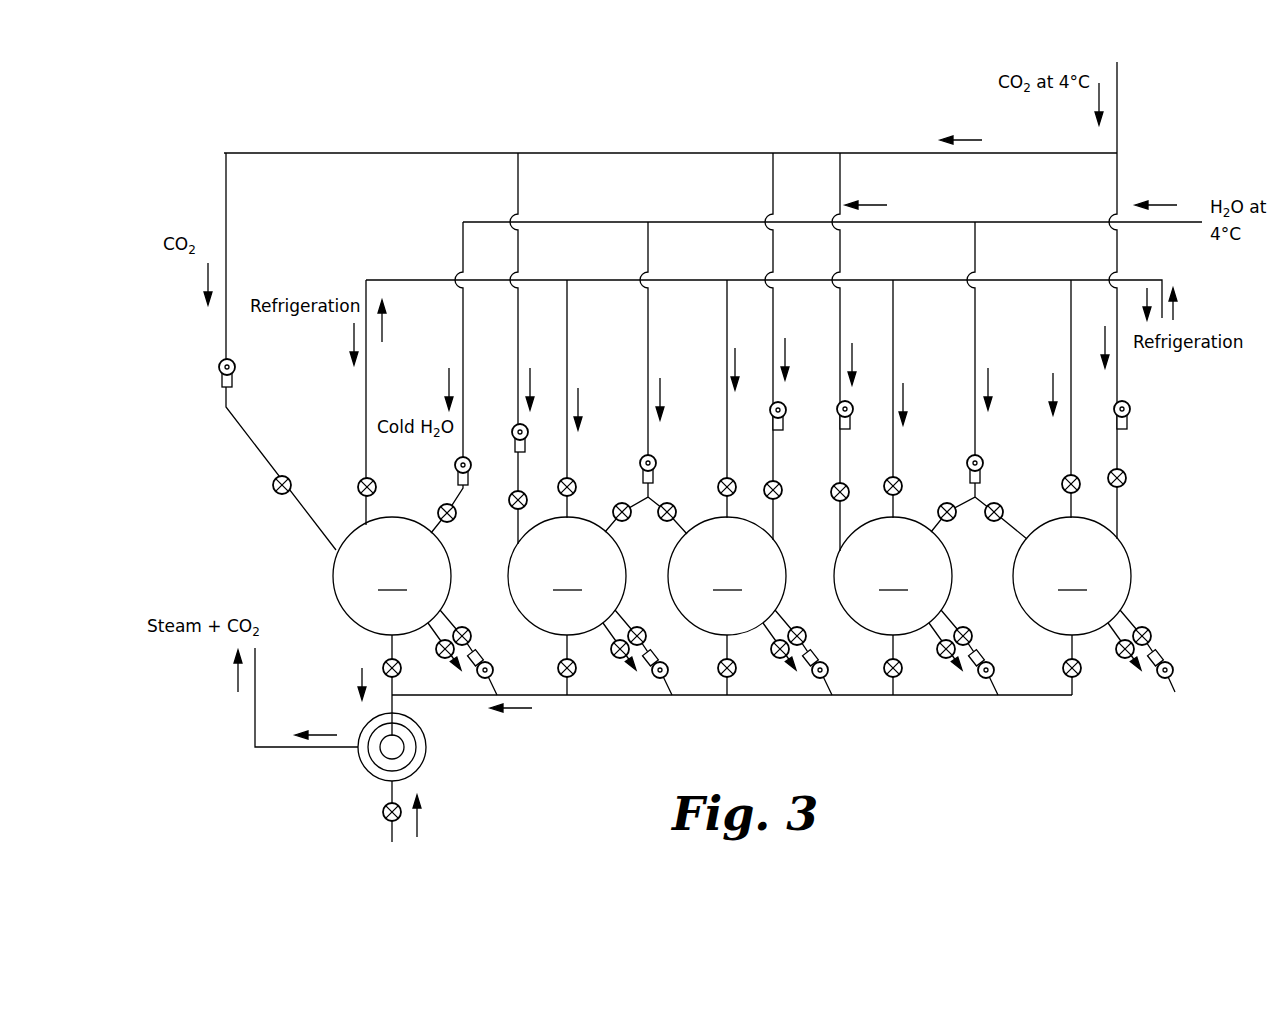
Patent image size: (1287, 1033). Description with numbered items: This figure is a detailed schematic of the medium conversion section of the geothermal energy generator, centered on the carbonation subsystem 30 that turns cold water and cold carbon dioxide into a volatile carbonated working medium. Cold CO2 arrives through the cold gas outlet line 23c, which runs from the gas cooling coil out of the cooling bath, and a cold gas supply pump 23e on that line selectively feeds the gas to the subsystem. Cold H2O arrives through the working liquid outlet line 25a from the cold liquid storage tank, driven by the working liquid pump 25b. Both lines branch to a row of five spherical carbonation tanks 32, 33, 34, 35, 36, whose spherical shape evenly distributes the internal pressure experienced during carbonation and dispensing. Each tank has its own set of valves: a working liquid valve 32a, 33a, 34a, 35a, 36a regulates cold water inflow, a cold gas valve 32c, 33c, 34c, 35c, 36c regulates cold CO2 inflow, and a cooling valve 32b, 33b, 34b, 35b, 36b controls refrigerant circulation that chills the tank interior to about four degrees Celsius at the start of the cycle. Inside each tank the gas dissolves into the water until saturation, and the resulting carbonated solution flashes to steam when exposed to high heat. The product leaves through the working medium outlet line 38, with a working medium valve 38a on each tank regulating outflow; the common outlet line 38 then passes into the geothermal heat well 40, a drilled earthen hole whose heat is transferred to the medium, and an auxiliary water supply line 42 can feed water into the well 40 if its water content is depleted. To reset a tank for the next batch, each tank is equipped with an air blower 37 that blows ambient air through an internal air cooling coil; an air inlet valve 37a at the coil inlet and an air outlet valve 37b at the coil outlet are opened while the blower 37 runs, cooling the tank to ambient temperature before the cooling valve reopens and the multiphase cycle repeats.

The carbonation subsystem 30 is at (381, 124).
The cold gas outlet line 23c is at (640, 153).
The cold gas supply pump 23e is at (218, 370).
The working liquid outlet line 25a is at (966, 456).
The working liquid pump 25b is at (472, 452).
The carbonation tank 32 is at (392, 576).
The working liquid valve 32a is at (440, 506).
The cooling valve 32b is at (358, 487).
The cold gas valve 32c is at (273, 490).
The carbonation tank 33 is at (567, 576).
The working liquid valve 33a is at (617, 504).
The cooling valve 33b is at (572, 480).
The cold gas valve 33c is at (510, 506).
The carbonation tank 34 is at (727, 576).
The working liquid valve 34a is at (662, 504).
The cooling valve 34b is at (733, 479).
The cold gas valve 34c is at (766, 483).
The carbonation tank 35 is at (893, 576).
The working liquid valve 35a is at (940, 505).
The cooling valve 35b is at (886, 479).
The cold gas valve 35c is at (833, 485).
The carbonation tank 36 is at (1072, 576).
The working liquid valve 36a is at (996, 503).
The cooling valve 36b is at (1062, 480).
The cold gas valve 36c is at (1110, 472).
The air blower 37 is at (490, 680).
The air inlet valve 37a is at (1152, 630).
The air outlet valve 37b is at (1122, 658).
The working medium outlet line 38 is at (707, 697).
The working medium valve 38a is at (400, 676).
The geothermal heat well 40 is at (360, 765).
The auxiliary water supply line 42 is at (392, 832).